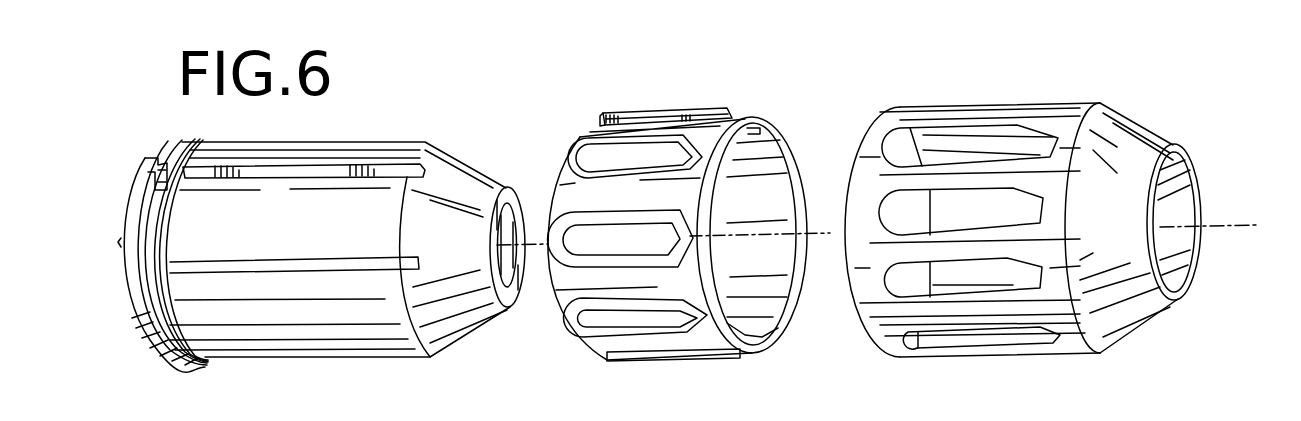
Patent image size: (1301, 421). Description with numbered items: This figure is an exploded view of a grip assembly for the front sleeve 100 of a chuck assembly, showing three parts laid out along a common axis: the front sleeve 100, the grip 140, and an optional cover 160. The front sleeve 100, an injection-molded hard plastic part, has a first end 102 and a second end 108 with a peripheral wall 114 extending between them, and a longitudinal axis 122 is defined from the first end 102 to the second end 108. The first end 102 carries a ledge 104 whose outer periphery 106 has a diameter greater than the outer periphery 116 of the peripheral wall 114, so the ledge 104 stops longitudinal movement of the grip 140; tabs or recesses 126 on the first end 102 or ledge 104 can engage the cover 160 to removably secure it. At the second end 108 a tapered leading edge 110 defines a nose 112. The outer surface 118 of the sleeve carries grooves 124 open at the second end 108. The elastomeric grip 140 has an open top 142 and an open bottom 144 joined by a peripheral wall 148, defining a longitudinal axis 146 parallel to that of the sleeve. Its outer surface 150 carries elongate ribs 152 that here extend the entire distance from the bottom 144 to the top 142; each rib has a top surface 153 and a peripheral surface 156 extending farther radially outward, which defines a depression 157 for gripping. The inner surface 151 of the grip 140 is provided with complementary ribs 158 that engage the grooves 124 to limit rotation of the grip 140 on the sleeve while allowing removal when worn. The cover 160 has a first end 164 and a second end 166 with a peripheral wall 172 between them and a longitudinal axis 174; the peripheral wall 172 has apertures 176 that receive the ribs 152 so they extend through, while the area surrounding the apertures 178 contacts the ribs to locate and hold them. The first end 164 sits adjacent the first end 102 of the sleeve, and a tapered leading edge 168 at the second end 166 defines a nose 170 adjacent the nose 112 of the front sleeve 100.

The front sleeve 100 is at (352, 96).
The first end 102 is at (529, 180).
The ledge 104 is at (148, 322).
The outer periphery 106 is at (160, 163).
The second end 108 is at (94, 256).
The leading edge 110 is at (429, 358).
The nose 112 is at (512, 292).
The peripheral wall 114 is at (369, 150).
The outer periphery 116 is at (248, 330).
The outer surface 118 is at (325, 330).
The longitudinal axis 122 is at (510, 200).
The grooves 124 is at (325, 270).
The tabs or recesses 126 is at (152, 176).
The grip 140 is at (650, 74).
The open top 142 is at (805, 162).
The open bottom 144 is at (563, 300).
The longitudinal axis 146 is at (826, 238).
The peripheral wall 148 is at (688, 282).
The outer surface 150 is at (700, 145).
The inner surface 151 is at (731, 229).
The ribs 152 is at (672, 102).
The top surface 153 is at (603, 112).
The peripheral surface 156 is at (607, 212).
The depression 157 is at (623, 242).
The complementary ribs 158 is at (760, 332).
The cover 160 is at (1024, 73).
The first end 164 is at (1212, 164).
The second end 166 is at (862, 101).
The leading edge 168 is at (1102, 355).
The nose 170 is at (1178, 300).
The peripheral wall 172 is at (1072, 338).
The longitudinal axis 174 is at (1230, 226).
The apertures 176 is at (929, 158).
The apertures 178 is at (940, 235).